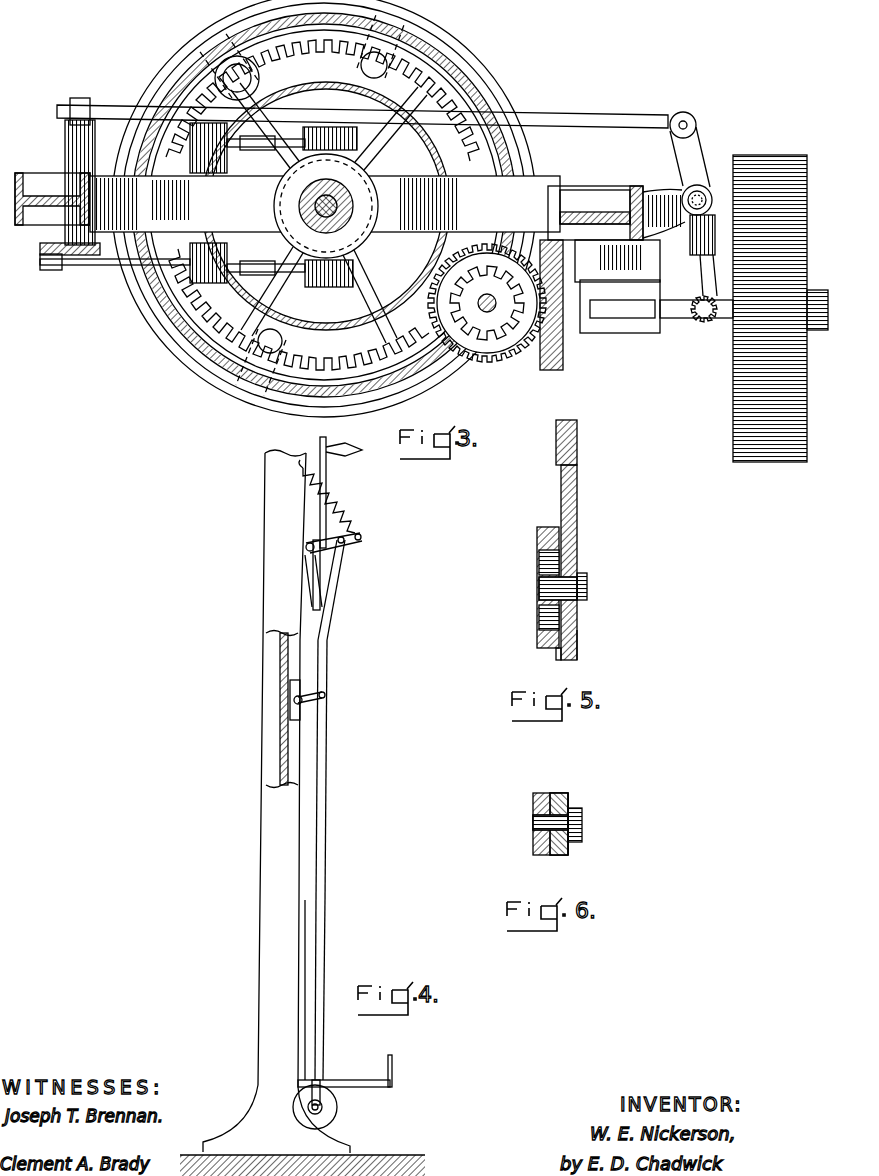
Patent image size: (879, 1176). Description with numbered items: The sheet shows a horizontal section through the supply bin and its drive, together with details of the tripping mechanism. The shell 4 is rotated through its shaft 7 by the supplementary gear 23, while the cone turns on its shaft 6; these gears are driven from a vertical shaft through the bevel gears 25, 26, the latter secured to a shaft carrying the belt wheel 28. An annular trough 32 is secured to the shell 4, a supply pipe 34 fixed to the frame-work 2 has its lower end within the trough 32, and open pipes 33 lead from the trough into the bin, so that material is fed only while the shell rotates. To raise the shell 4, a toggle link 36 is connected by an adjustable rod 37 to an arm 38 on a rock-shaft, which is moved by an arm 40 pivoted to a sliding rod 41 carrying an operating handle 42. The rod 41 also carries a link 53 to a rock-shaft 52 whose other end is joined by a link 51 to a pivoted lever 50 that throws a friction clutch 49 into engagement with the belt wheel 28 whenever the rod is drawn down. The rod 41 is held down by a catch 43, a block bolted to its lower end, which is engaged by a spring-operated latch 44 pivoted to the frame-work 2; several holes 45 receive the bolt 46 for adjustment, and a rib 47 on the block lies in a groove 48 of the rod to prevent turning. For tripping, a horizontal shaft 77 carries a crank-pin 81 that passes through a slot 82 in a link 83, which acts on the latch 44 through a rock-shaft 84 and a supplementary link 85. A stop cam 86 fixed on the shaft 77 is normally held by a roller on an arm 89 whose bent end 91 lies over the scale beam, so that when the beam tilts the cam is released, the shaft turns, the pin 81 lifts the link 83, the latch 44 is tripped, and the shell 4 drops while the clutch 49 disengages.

In FIG. 3, the frame-work 2 is at (350, 206).
In FIG. 4, the frame-work 2 is at (302, 813).
In FIG. 3, the shell 4 is at (495, 108).
In FIG. 3, the shaft 6 is at (329, 191).
In FIG. 3, the shaft 7 is at (331, 227).
In FIG. 3, the supplementary gear 23 is at (510, 325).
In FIG. 3, the bevel gear 25 is at (492, 355).
In FIG. 3, the bevel gear 26 is at (563, 350).
In FIG. 3, the belt wheel 28 is at (768, 308).
In FIG. 3, the annular trough 32 is at (458, 64).
In FIG. 3, the pipe 33 is at (285, 344).
In FIG. 3, the pipe 34 is at (222, 72).
In FIG. 3, the link 36 is at (357, 140).
In FIG. 3, the rod 37 is at (247, 199).
In FIG. 3, the arm 38 is at (210, 283).
In FIG. 3, the arm 40 is at (120, 265).
In FIG. 3, the sliding rod 41 is at (40, 261).
In FIG. 4, the sliding rod 41 is at (326, 486).
In FIG. 5, the sliding rod 41 is at (577, 500).
In FIG. 6, the sliding rod 41 is at (562, 795).
In FIG. 4, the operating handle 42 is at (352, 453).
In FIG. 4, the catch 43 is at (313, 603).
In FIG. 5, the catch 43 is at (539, 640).
In FIG. 6, the catch 43 is at (533, 806).
In FIG. 4, the latch 44 is at (308, 562).
In FIG. 5, the holes 45 is at (539, 562).
In FIG. 5, the bolt 46 is at (587, 592).
In FIG. 6, the bolt 46 is at (582, 830).
In FIG. 5, the rib 47 is at (577, 640).
In FIG. 6, the rib 47 is at (568, 848).
In FIG. 5, the groove 48 is at (556, 658).
In FIG. 3, the friction clutch 49 is at (704, 325).
In FIG. 3, the pivoted lever 50 is at (690, 165).
In FIG. 3, the link 51 is at (588, 118).
In FIG. 3, the rock-shaft 52 is at (88, 140).
In FIG. 3, the link 53 is at (70, 240).
In FIG. 4, the horizontal shaft 77 is at (310, 1115).
In FIG. 4, the crank-pin 81 is at (322, 1105).
In FIG. 4, the slot 82 is at (320, 1085).
In FIG. 4, the link 83 is at (326, 828).
In FIG. 4, the rock-shaft 84 is at (294, 700).
In FIG. 4, the supplementary link 85 is at (335, 645).
In FIG. 4, the stop cam 86 is at (332, 1115).
In FIG. 4, the arm 89 is at (344, 1072).
In FIG. 4, the end 91 is at (392, 1060).